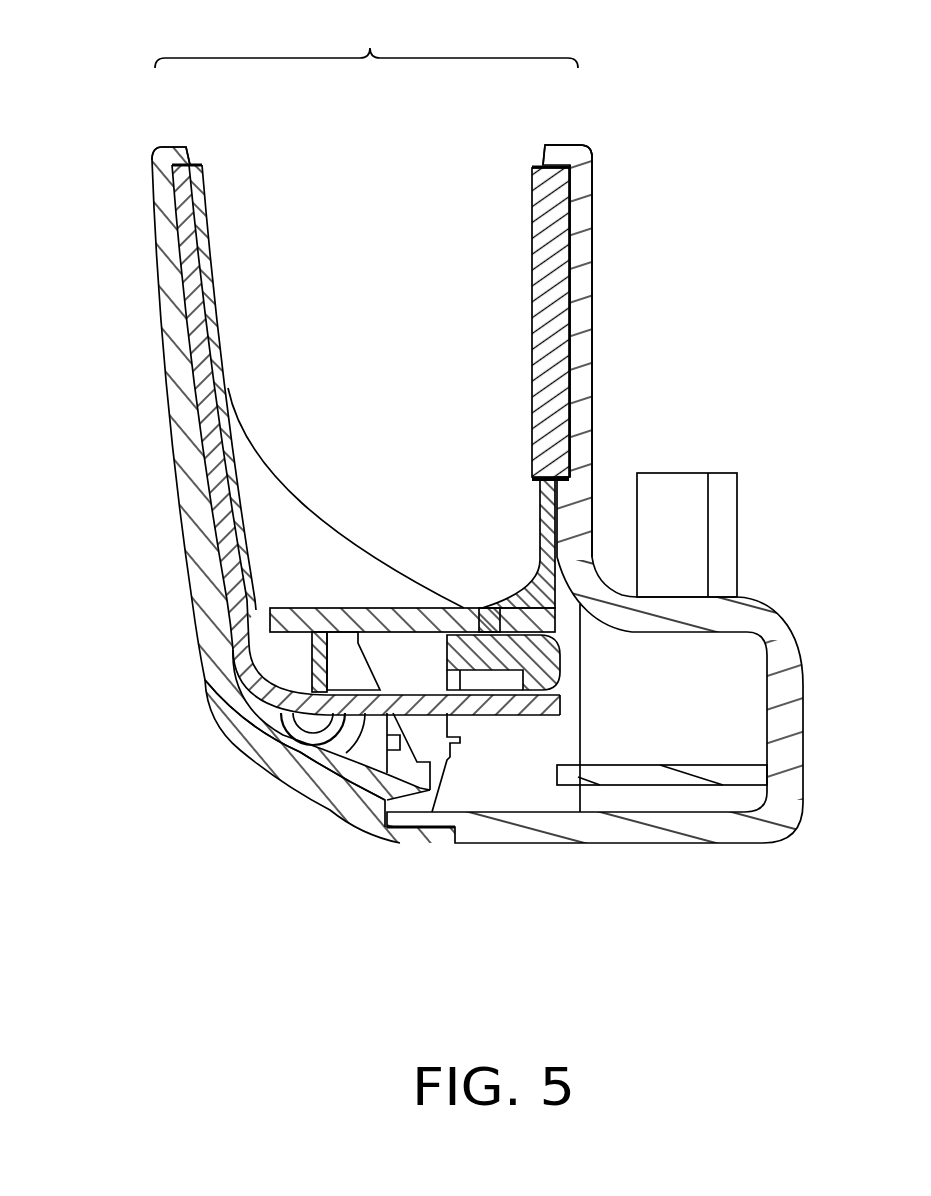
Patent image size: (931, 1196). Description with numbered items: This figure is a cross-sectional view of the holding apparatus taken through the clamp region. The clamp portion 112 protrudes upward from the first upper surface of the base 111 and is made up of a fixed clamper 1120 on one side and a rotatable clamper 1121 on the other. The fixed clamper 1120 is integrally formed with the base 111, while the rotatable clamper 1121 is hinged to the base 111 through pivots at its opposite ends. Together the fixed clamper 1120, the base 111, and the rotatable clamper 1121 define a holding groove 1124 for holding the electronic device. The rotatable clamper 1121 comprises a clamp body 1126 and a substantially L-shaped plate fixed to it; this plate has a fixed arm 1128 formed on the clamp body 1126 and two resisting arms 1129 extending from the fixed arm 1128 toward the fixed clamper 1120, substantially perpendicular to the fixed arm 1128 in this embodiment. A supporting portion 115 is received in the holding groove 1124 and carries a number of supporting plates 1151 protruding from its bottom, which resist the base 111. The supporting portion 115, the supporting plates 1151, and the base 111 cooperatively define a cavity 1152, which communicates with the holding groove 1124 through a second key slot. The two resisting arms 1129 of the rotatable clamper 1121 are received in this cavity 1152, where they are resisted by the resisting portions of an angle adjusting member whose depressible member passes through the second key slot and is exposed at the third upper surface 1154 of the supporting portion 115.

The clamp portion 112 is at (372, 91).
The fixed clamper 1120 is at (560, 153).
The rotatable clamper 1121 is at (175, 150).
The holding groove 1124 is at (475, 325).
The clamp body 1126 is at (163, 250).
The fixed arm 1128 is at (193, 321).
The resisting arms 1129 is at (340, 726).
The base 111 is at (262, 713).
The supporting portion 115 is at (458, 608).
The supporting plates 1151 is at (383, 697).
The cavity 1152 is at (507, 683).
The third upper surface 1154 is at (457, 607).